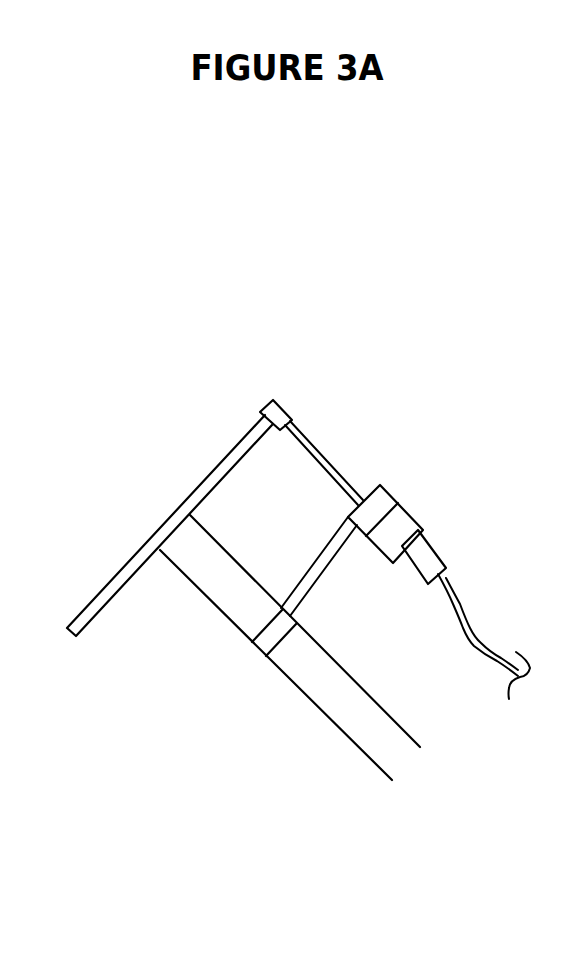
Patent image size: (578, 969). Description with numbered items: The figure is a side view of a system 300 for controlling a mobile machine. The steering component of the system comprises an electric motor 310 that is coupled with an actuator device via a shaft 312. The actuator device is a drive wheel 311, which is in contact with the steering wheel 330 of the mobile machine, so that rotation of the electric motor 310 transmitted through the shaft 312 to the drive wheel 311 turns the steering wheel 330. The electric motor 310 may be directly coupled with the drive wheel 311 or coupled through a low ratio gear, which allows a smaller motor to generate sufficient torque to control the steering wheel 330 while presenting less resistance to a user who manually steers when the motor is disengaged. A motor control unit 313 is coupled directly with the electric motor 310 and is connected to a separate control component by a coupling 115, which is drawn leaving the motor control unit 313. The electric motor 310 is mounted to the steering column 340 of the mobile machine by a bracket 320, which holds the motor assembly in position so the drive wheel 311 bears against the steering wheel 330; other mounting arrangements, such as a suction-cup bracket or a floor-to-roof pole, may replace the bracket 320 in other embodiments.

The system 300 is at (63, 212).
The drive wheel 311 is at (287, 399).
The shaft 312 is at (337, 463).
The electric motor 310 is at (414, 521).
The motor control unit 313 is at (430, 552).
The coupling 115 is at (500, 657).
The bracket 320 is at (338, 578).
The steering wheel 330 is at (219, 464).
The steering column 340 is at (311, 680).